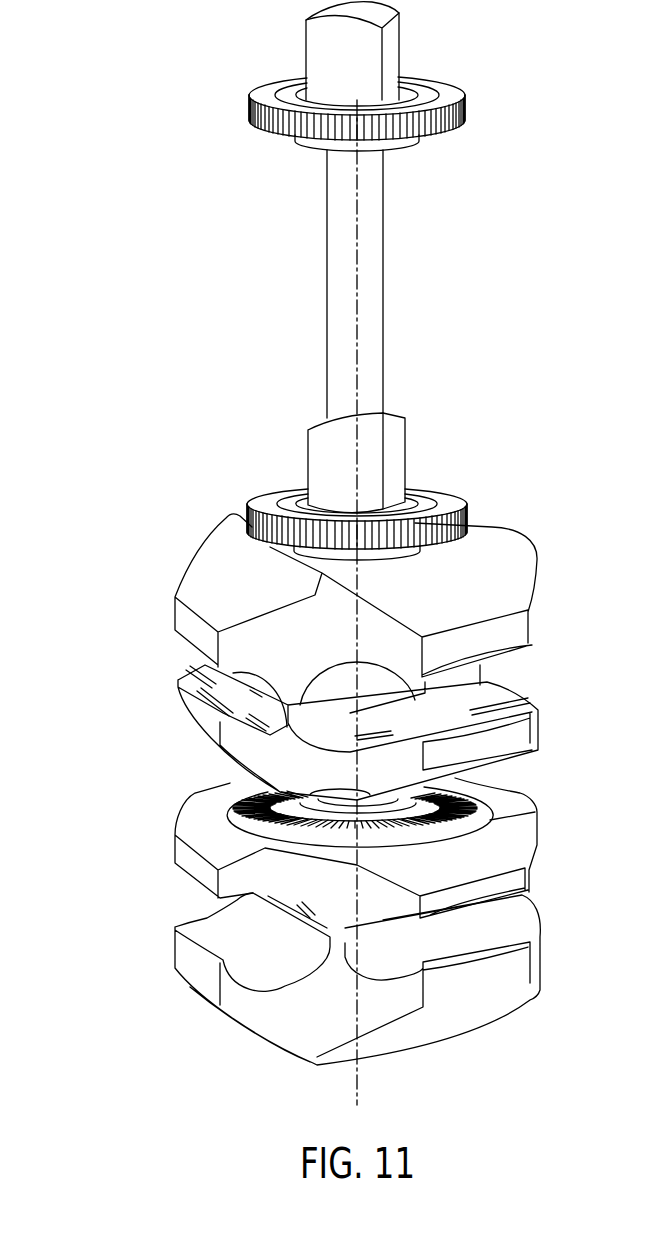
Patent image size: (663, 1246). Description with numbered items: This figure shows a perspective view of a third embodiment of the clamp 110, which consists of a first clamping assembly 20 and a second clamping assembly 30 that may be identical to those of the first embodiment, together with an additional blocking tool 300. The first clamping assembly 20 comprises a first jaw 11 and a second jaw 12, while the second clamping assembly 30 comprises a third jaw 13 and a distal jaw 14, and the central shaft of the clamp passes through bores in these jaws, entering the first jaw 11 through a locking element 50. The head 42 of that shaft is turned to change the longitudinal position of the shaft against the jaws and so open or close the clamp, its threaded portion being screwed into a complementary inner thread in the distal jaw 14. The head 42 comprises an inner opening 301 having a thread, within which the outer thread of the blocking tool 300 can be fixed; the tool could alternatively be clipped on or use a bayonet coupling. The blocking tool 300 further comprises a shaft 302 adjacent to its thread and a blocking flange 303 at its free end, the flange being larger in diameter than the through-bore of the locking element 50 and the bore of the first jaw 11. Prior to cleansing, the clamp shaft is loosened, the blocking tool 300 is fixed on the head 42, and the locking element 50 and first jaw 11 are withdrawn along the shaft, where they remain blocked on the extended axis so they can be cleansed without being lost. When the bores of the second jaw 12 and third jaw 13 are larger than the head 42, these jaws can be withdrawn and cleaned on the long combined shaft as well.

The clamp 110 is at (106, 372).
The blocking tool 300 is at (190, 243).
The blocking flange 303 is at (443, 98).
The shaft 302 is at (375, 258).
The inner opening 301 is at (345, 420).
The head 42 is at (398, 452).
The locking element 50 is at (262, 493).
The first clamping assembly 20 is at (138, 645).
The first jaw 11 is at (522, 570).
The second jaw 12 is at (542, 737).
The second clamping assembly 30 is at (151, 894).
The third jaw 13 is at (515, 848).
The distal jaw 14 is at (522, 965).